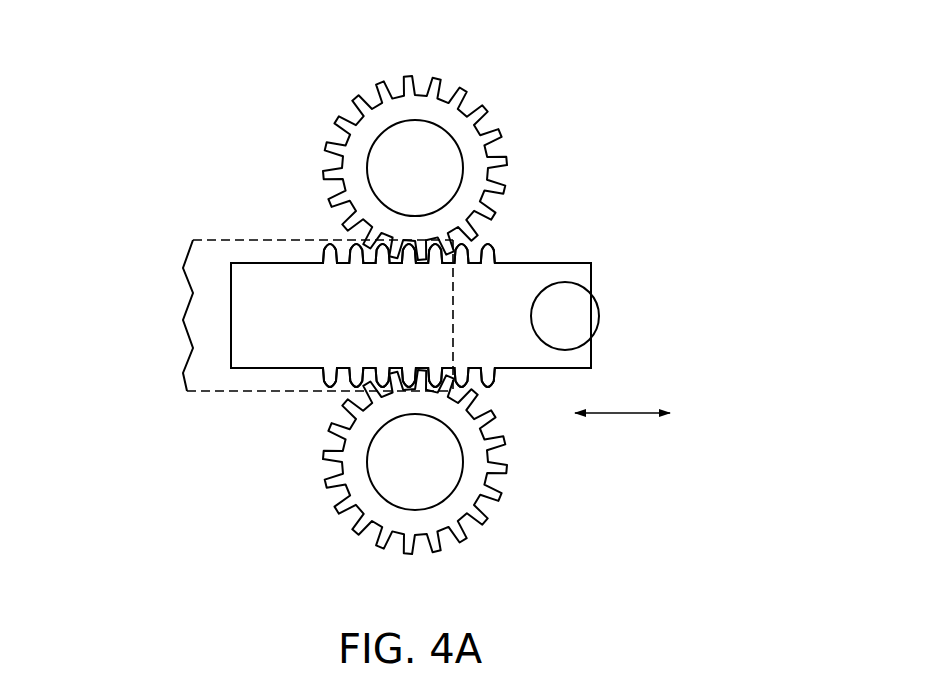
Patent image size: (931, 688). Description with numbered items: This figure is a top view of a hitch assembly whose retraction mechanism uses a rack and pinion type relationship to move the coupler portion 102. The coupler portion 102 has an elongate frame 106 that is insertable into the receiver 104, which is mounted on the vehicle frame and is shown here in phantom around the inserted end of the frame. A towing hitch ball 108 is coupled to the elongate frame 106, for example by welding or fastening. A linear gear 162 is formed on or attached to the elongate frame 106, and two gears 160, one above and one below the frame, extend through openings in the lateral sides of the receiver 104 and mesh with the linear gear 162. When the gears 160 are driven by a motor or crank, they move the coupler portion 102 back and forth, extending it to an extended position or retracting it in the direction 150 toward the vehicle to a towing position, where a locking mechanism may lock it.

The coupler portion 102 is at (640, 265).
The receiver 104 is at (250, 239).
The elongate frame 106 is at (560, 262).
The towing hitch ball 108 is at (600, 314).
The direction 150 is at (620, 415).
The gears 160 is at (476, 97).
The linear gear 162 is at (327, 392).